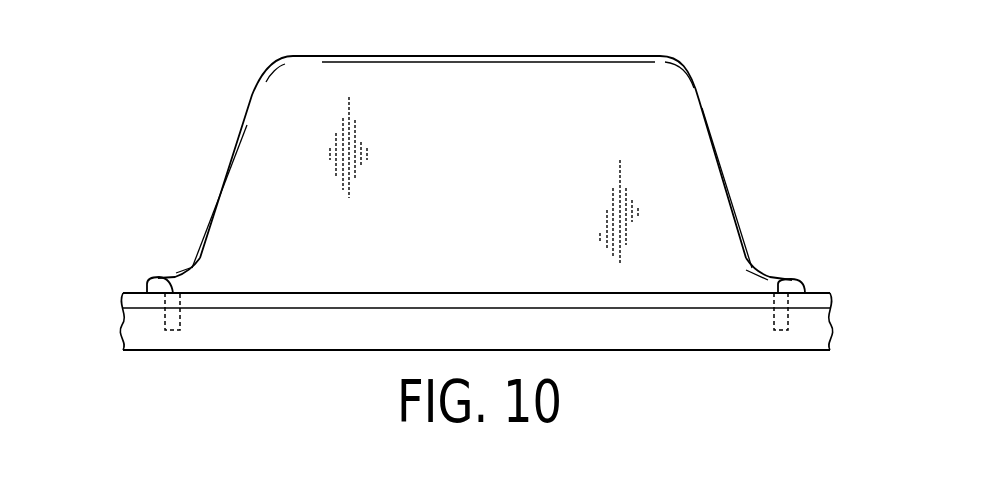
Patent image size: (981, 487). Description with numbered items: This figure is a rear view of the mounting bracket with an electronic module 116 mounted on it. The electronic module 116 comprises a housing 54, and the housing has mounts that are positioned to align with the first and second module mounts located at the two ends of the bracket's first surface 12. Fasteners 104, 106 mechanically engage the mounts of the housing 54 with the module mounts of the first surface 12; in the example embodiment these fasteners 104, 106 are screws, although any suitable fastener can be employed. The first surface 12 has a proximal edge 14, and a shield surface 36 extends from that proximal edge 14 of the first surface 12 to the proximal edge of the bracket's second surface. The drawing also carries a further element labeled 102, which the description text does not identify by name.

The electronic module 116 is at (186, 87).
The housing 54 is at (719, 150).
The fastener 104 is at (173, 286).
The fastener 106 is at (778, 288).
The shield surface 36 is at (826, 330).
The first surface 12 is at (268, 309).
The proximal edge 14 is at (592, 350).
The fastener / tab 102 is at (165, 318).